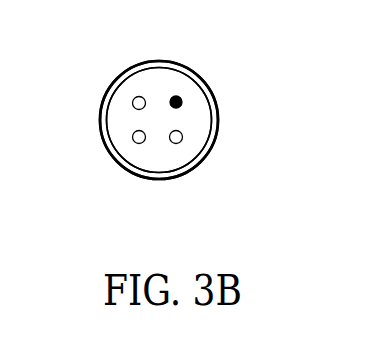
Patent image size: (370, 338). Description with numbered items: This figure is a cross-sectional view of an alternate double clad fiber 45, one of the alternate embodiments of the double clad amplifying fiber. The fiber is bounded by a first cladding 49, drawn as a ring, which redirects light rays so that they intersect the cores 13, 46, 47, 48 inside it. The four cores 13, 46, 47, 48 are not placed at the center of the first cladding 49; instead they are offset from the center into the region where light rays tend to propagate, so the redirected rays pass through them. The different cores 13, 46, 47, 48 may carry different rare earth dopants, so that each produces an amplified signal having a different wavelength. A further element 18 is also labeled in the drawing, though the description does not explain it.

The double clad fiber 45 is at (162, 180).
The first cladding 49 is at (135, 77).
The core 48 is at (132, 103).
The core 13 is at (179, 97).
The inner ring 18 is at (110, 152).
The core 47 is at (135, 141).
The core 46 is at (181, 142).